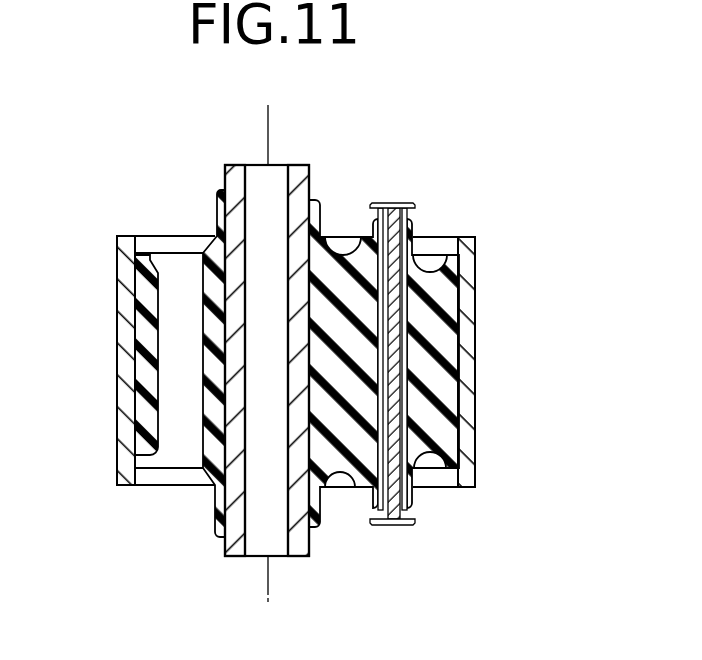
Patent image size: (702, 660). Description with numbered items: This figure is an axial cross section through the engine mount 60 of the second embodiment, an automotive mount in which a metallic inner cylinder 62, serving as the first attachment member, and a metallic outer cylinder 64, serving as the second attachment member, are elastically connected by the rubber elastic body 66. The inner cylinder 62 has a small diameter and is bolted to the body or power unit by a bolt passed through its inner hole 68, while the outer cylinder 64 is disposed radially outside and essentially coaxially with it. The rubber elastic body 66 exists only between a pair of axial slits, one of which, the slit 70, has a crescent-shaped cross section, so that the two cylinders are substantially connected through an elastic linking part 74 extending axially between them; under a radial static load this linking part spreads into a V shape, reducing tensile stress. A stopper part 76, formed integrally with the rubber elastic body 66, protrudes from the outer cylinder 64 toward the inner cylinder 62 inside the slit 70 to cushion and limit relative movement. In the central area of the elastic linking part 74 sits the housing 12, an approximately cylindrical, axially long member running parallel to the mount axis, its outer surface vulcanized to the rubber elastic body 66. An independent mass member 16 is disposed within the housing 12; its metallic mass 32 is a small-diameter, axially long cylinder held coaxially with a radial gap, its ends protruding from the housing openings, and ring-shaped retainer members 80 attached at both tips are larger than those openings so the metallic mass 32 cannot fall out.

The engine mount 60 is at (110, 177).
The inner cylinder 62 is at (300, 193).
The outer cylinder 64 is at (127, 308).
The rubber elastic body 66 is at (333, 490).
The inner hole 68 is at (245, 477).
The slit 70 is at (203, 390).
The elastic linking part 74 is at (447, 302).
The stopper part 76 is at (148, 378).
The retainer member 80 is at (442, 357).
The housing 12 is at (403, 365).
The independent mass member 16 is at (417, 252).
The metallic mass 32 is at (393, 308).